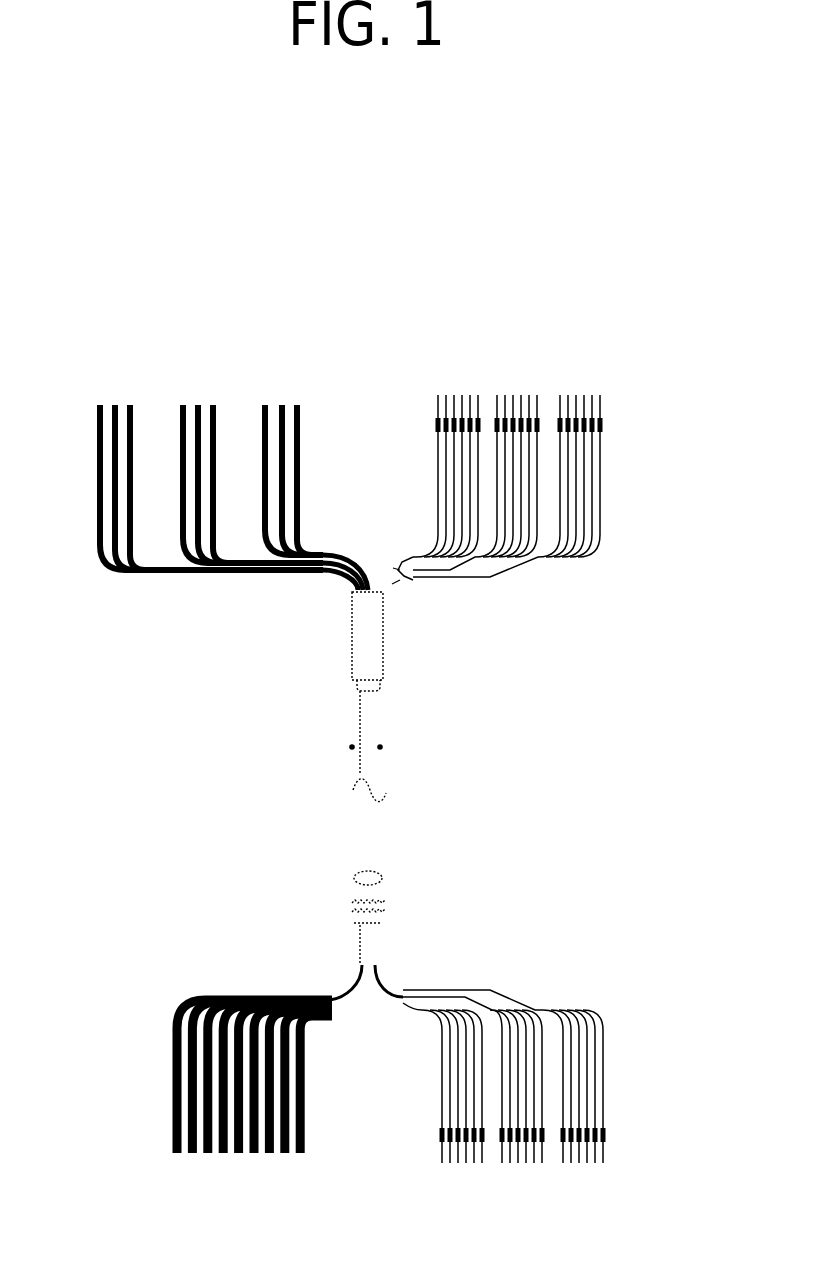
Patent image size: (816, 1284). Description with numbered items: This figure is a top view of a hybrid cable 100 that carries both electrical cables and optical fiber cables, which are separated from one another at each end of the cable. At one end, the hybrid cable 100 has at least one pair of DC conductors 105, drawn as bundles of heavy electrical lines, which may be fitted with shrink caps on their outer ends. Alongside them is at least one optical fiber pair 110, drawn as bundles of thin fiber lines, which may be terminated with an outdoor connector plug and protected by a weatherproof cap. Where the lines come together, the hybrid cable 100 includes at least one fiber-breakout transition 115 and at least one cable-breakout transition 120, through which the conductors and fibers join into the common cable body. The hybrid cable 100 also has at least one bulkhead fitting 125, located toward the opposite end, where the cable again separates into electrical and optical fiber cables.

The hybrid cable 100 is at (358, 675).
The pair of DC conductors 105 is at (197, 392).
The optical fiber pair 110 is at (518, 393).
The fiber-breakout transition 115 is at (398, 574).
The cable-breakout transition 120 is at (367, 625).
The bulkhead fitting 125 is at (362, 888).